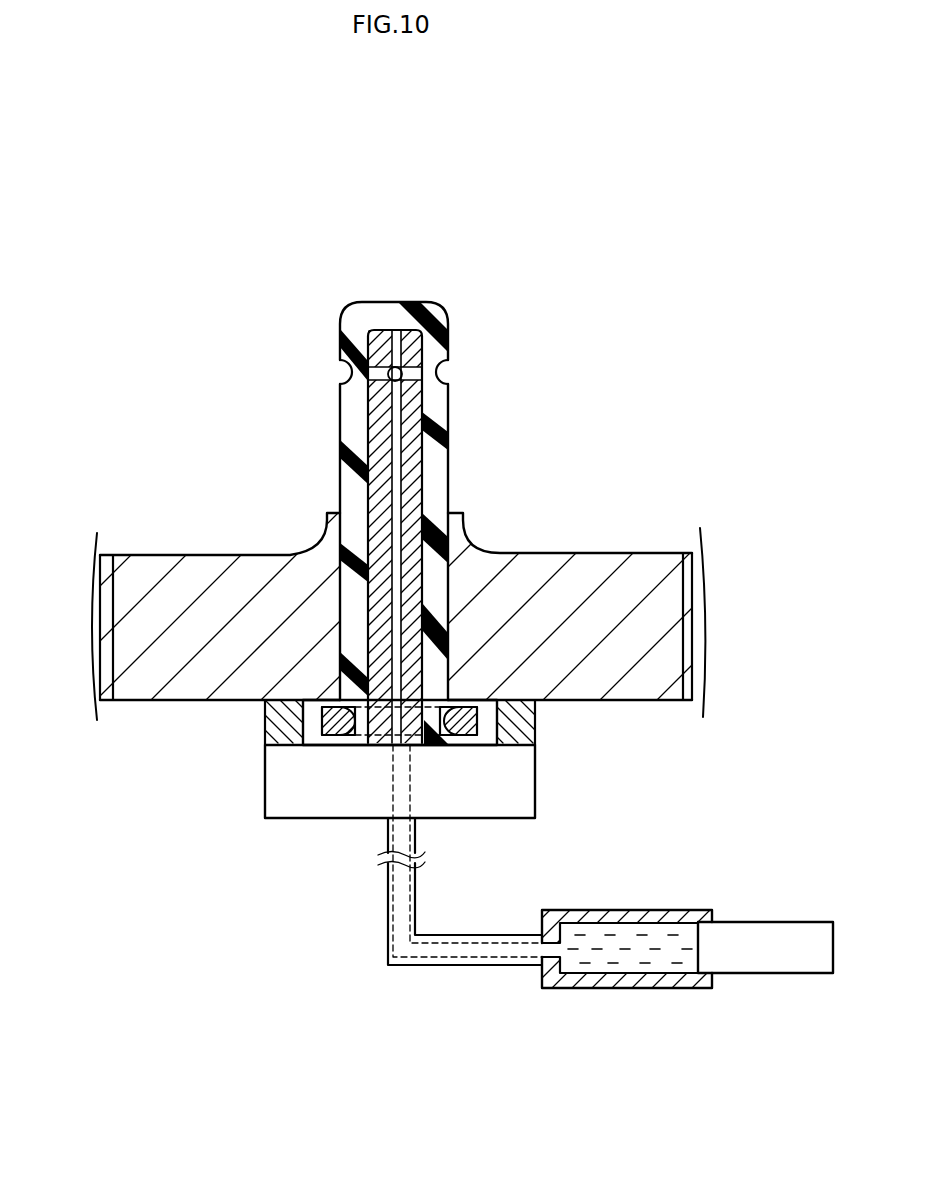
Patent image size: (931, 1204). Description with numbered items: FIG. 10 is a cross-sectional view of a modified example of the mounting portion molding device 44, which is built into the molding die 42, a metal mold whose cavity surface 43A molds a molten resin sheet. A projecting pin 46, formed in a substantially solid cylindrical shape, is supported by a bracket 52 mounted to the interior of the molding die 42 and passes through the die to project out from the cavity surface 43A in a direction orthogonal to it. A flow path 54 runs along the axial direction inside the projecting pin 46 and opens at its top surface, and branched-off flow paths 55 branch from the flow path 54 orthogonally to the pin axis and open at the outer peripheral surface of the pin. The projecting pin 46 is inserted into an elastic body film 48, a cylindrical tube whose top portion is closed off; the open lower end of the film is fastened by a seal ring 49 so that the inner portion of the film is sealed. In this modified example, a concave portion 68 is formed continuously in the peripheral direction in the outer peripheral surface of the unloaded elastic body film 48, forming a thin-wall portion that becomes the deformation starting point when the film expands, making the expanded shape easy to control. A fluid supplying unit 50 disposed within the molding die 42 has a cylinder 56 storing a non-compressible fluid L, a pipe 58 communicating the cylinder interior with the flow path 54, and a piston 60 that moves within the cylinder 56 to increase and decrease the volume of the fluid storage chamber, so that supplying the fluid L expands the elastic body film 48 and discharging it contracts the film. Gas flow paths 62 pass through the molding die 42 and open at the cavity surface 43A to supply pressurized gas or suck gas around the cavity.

The mounting portion molding device 44 is at (254, 872).
The cavity surface 43A is at (148, 555).
The molding die 42 is at (168, 703).
The gas flow paths 62 is at (121, 702).
The elastic body film 48 is at (340, 418).
The concave portion 68 is at (450, 370).
The projecting pin 46 is at (425, 483).
The flow path 54 is at (388, 340).
The branched-off flow paths 55 is at (412, 374).
The seal ring 49 is at (480, 720).
The bracket 52 is at (535, 765).
The fluid supplying unit 50 is at (692, 858).
The pipe 58 is at (503, 935).
The cylinder 56 is at (620, 910).
The piston 60 is at (725, 922).
The fluid L is at (627, 965).